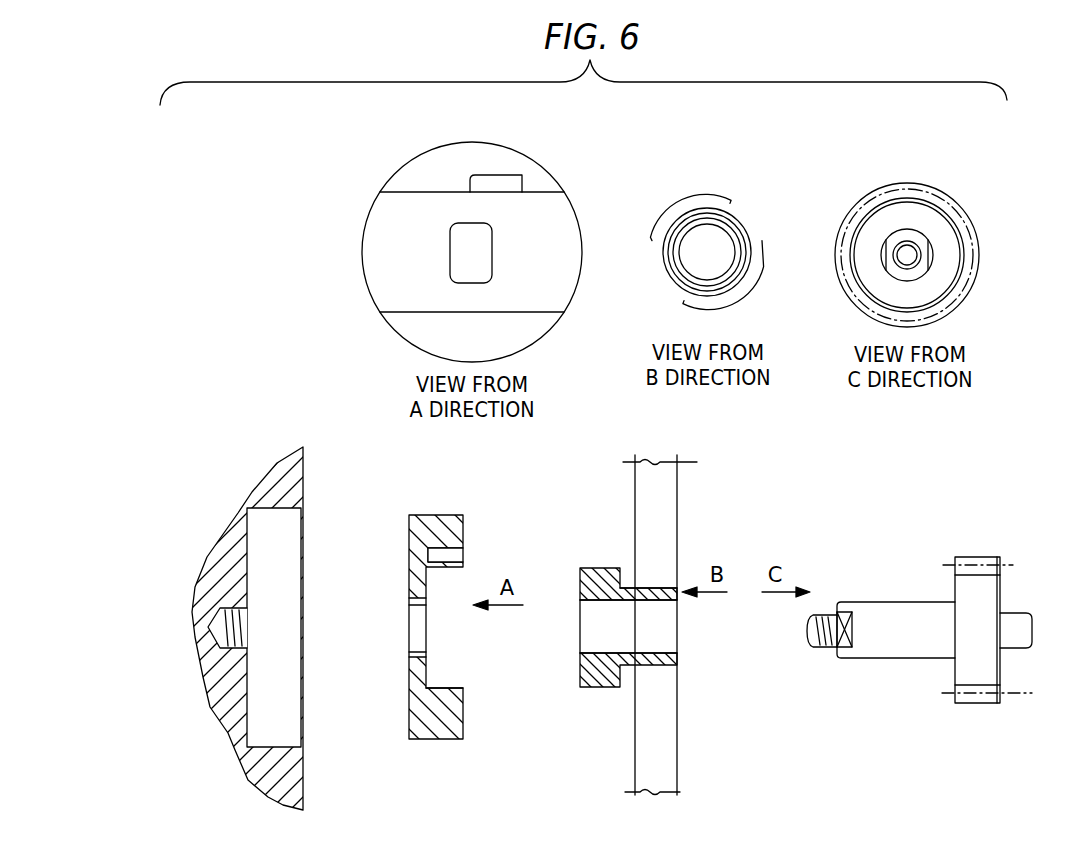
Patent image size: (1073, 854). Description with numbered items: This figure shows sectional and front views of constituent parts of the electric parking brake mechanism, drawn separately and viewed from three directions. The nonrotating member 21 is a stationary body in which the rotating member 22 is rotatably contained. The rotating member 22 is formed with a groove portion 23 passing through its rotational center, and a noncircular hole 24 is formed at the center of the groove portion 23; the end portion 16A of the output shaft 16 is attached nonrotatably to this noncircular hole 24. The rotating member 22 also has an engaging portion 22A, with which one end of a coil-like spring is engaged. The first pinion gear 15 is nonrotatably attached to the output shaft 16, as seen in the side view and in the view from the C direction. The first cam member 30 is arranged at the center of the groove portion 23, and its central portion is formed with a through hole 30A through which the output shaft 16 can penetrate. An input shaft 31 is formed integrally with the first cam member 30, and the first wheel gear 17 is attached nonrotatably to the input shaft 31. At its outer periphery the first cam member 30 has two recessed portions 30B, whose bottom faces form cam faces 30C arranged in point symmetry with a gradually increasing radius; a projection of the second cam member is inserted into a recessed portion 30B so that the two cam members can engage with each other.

The first pinion gear 15 is at (937, 228).
The output shaft 16 is at (920, 237).
The end portion 16A is at (840, 648).
The first wheel gear 17 is at (667, 507).
The nonrotating member 21 is at (270, 485).
The rotating member 22 is at (417, 167).
The engaging portion 22A is at (503, 192).
The groove portion 23 is at (522, 312).
The noncircular hole 24 is at (463, 253).
The first cam member 30 is at (680, 205).
The through hole 30A is at (670, 650).
The recessed portion 30B is at (745, 222).
The cam face 30C is at (747, 250).
The input shaft 31 is at (653, 587).